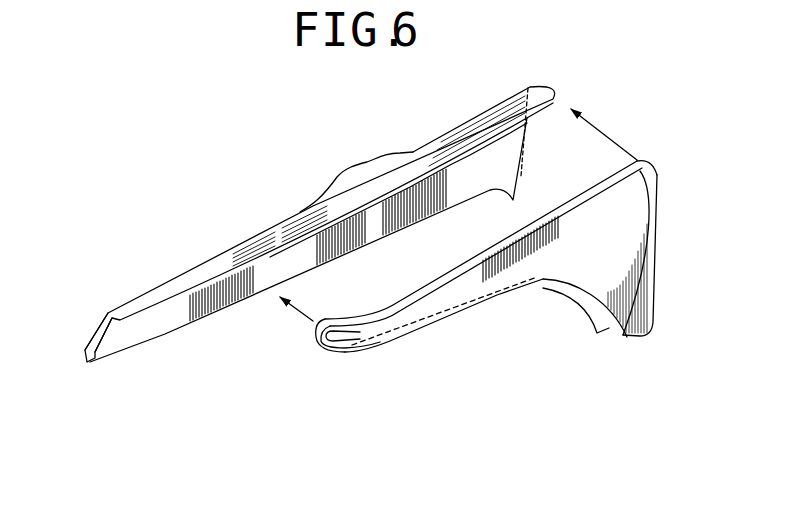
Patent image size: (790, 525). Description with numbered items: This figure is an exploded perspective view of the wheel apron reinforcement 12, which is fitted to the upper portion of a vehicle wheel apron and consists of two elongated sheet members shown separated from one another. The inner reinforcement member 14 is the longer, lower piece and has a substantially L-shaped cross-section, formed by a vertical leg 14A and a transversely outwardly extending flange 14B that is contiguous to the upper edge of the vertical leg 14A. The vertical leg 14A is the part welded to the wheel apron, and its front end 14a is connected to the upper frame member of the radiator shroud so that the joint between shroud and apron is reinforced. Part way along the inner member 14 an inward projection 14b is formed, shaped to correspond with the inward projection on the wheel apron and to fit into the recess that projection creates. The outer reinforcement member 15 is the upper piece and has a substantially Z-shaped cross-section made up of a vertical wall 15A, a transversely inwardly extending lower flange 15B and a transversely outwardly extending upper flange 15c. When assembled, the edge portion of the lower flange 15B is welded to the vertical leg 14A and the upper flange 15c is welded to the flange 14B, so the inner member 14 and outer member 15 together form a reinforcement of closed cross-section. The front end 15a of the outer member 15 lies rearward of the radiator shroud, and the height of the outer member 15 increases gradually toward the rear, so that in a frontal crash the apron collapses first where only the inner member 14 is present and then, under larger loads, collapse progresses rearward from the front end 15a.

The wheel apron reinforcement 12 is at (246, 184).
The inner reinforcement member 14 is at (321, 215).
The front end of the inner member 14a is at (95, 337).
The vertical leg 14A is at (217, 310).
The inward projection 14b is at (367, 162).
The transversely outwardly extending flange 14B is at (477, 125).
The outer reinforcement member 15 is at (586, 259).
The front end of the outer member 15a is at (345, 338).
The vertical wall 15A is at (637, 228).
The transversely inwardly extending lower flange 15B is at (605, 322).
The transversely outwardly extending upper flange 15c is at (640, 162).